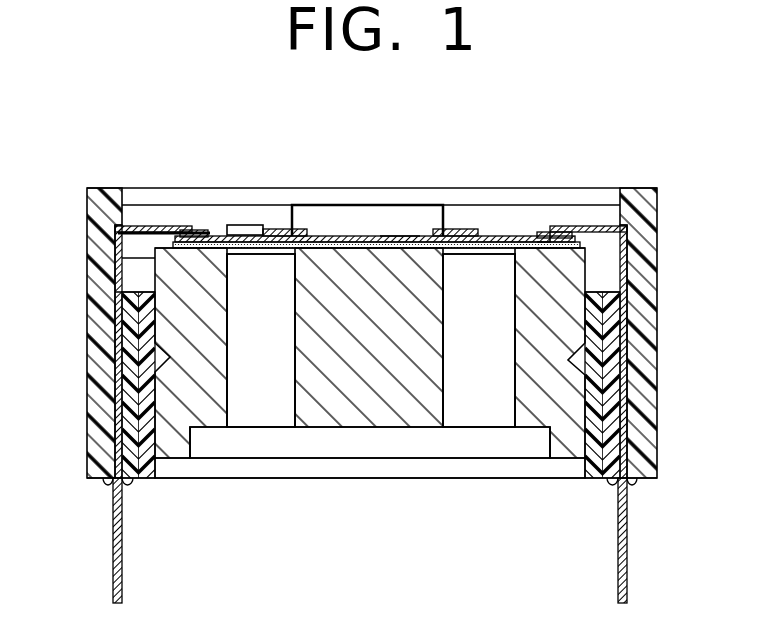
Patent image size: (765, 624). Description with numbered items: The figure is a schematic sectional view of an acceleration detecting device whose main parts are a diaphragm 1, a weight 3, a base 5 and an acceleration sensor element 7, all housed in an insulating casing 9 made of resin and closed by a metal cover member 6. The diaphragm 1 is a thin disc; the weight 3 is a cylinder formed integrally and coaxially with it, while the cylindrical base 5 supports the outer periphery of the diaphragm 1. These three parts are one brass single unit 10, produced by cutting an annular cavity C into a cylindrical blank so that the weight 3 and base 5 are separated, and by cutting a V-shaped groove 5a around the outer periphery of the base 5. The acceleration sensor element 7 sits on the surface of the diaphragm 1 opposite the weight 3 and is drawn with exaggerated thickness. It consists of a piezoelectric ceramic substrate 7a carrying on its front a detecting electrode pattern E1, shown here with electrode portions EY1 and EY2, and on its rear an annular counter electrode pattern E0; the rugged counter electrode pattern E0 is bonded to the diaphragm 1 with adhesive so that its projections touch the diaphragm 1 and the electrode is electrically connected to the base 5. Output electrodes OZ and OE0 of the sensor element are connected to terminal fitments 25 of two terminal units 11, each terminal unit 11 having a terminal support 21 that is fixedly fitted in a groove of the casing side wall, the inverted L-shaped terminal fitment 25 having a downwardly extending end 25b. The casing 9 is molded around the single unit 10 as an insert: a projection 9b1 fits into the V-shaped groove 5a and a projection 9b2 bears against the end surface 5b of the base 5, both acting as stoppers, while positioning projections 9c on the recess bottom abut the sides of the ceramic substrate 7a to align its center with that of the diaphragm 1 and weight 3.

The diaphragm 1 is at (500, 238).
The weight 3 is at (408, 400).
The base 5 is at (206, 405).
The V-shaped groove 5a is at (165, 341).
The end surface 5b is at (160, 478).
The cover member 6 is at (358, 203).
The acceleration sensor element 7 is at (493, 230).
The piezoelectric ceramic substrate 7a is at (397, 237).
The insulating casing 9 is at (167, 186).
The projection 9b1 is at (157, 355).
The projection 9b2 is at (180, 448).
The positioning projections 9c is at (117, 226).
The single unit 10 is at (437, 435).
The terminal unit 11 is at (108, 270).
The terminal support 21 is at (100, 453).
The terminal fitment 25 is at (130, 404).
The other end of terminal fitment 25b is at (152, 227).
The annular cavity C is at (263, 398).
The counter electrode pattern E0 is at (371, 279).
The electrode pattern E1 is at (283, 226).
The electrode EY1 is at (455, 229).
The electrode EY2 is at (272, 229).
The output electrode OE0 is at (540, 233).
The output electrode OZ is at (200, 230).